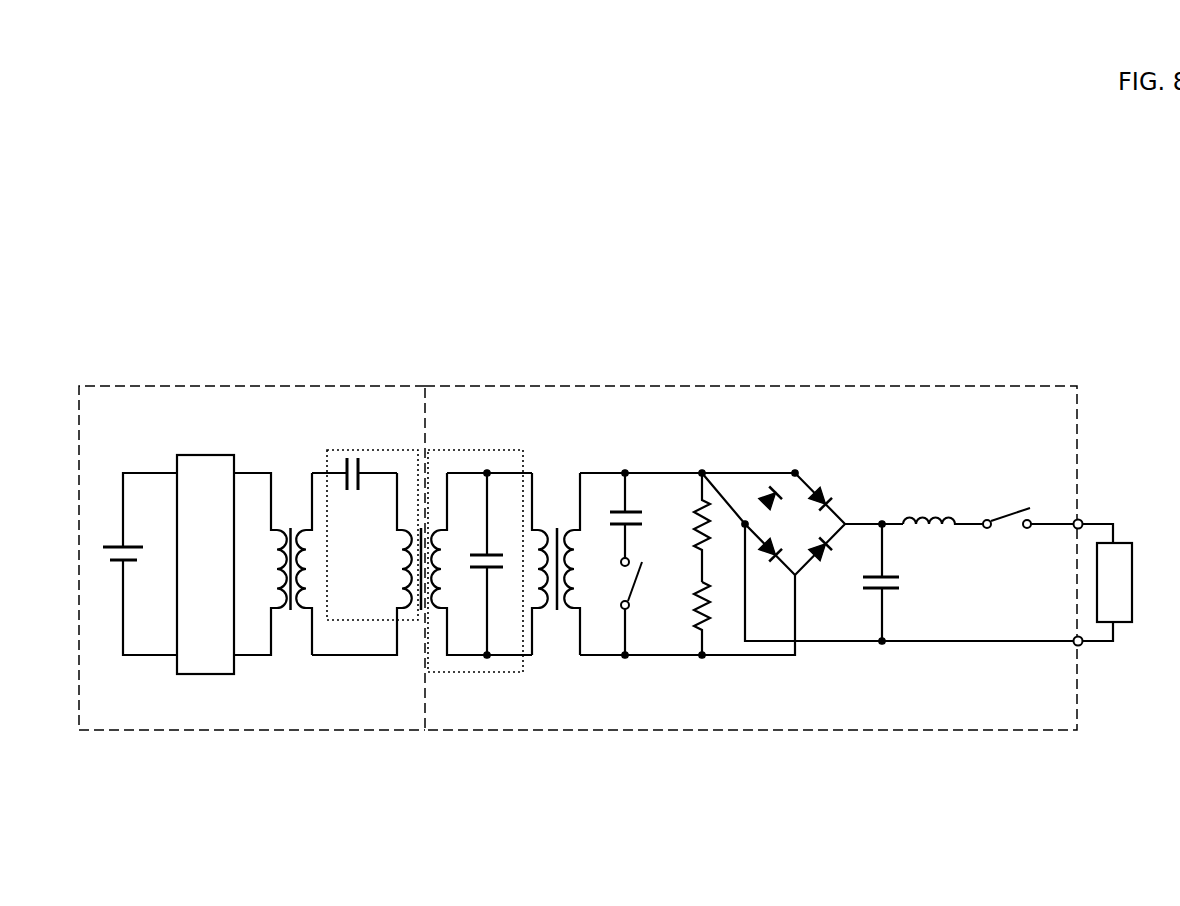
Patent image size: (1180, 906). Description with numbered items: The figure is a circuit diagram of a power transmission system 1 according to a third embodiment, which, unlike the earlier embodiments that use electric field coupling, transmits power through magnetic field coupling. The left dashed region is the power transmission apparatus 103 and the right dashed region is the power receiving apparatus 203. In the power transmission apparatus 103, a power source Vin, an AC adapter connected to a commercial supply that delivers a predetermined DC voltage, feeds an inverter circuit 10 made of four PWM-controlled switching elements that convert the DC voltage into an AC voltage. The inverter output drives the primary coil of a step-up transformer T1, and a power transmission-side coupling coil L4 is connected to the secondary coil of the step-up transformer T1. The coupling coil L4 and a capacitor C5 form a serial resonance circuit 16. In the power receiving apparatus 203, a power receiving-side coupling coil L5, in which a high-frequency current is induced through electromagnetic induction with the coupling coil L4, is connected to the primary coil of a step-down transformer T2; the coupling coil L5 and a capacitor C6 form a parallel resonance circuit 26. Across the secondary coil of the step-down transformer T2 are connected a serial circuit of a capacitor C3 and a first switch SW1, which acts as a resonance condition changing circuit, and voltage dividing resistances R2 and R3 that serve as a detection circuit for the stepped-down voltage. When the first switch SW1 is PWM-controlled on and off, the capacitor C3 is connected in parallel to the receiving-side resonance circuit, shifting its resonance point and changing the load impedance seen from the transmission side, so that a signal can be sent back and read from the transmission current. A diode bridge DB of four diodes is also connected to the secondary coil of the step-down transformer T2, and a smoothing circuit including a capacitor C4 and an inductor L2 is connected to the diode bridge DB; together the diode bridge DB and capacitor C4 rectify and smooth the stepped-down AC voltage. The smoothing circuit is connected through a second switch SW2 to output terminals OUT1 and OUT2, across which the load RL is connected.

The power transmission system 1 is at (195, 325).
The inverter circuit 10 is at (179, 455).
The serial resonance circuit 16 is at (345, 450).
The parallel resonance circuit 26 is at (500, 450).
The power transmission apparatus 103 is at (109, 385).
The power receiving apparatus 203 is at (1078, 385).
The power source Vin is at (140, 564).
The step-up transformer T1 is at (283, 471).
The capacitor C5 is at (354, 487).
The power transmission-side coupling coil L4 is at (362, 564).
The power receiving-side coupling coil L5 is at (459, 564).
The capacitor C6 is at (501, 564).
The step-down transformer T2 is at (564, 471).
The capacitor C3 is at (634, 514).
The first switch SW1 is at (652, 595).
The voltage dividing resistance R2 is at (667, 526).
The voltage dividing resistance R3 is at (667, 610).
The diode bridge DB is at (813, 475).
The capacitor C4 is at (883, 582).
The inductor L2 is at (943, 504).
The second switch SW2 is at (1011, 504).
The output terminal OUT1 is at (1085, 518).
The output terminal OUT2 is at (997, 649).
The load RL is at (1121, 543).